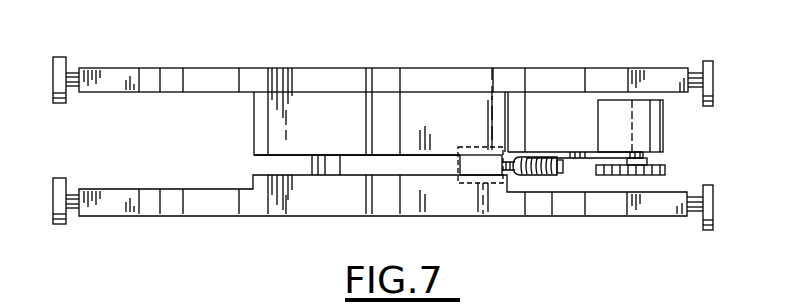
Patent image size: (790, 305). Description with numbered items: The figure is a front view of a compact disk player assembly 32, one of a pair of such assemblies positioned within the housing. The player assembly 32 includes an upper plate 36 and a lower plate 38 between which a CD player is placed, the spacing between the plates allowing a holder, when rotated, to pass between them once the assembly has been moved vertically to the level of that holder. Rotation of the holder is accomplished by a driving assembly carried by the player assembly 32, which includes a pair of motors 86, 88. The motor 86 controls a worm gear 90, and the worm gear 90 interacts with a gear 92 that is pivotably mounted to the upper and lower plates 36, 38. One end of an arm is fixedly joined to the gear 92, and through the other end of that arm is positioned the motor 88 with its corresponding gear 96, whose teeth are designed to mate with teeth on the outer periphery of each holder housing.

The compact disk player assembly 32 is at (462, 67).
The upper plate 36 is at (307, 216).
The lower plate 38 is at (333, 66).
The motor 86 is at (459, 160).
The motor 88 is at (665, 124).
The worm gear 90 is at (542, 177).
The gear 92 is at (562, 175).
The gear 96 is at (665, 170).